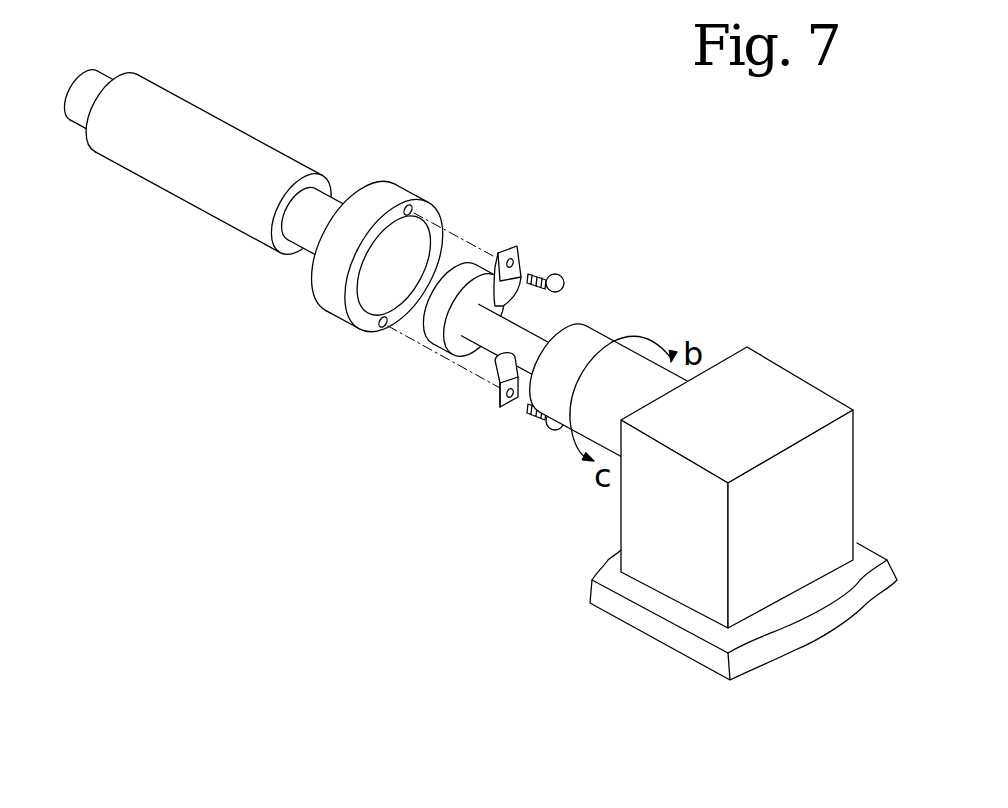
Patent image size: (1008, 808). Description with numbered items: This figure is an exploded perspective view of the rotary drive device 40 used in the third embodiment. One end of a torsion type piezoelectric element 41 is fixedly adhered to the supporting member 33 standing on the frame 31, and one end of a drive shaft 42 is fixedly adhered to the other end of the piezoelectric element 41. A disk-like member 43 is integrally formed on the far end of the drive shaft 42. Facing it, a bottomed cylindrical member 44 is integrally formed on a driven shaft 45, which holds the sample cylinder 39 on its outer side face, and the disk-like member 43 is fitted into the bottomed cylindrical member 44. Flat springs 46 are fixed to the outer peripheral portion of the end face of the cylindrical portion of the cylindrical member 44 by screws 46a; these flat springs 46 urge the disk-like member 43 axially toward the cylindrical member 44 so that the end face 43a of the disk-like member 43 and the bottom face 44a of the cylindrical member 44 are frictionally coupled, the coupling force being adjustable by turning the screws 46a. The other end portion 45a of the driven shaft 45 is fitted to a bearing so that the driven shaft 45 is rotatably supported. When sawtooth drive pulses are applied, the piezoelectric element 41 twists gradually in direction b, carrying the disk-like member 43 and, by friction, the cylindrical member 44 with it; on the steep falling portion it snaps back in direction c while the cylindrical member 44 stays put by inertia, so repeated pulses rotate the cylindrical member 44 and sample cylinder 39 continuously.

The frame 31 is at (863, 563).
The supporting member 33 is at (775, 380).
The sample cylinder 39 is at (240, 143).
The rotary drive device 40 is at (379, 281).
The torsion type piezoelectric element 41 is at (582, 340).
The drive shaft 42 is at (492, 340).
The disk-like member 43 is at (447, 294).
The end face 43a is at (455, 243).
The bottomed cylindrical member 44 is at (362, 284).
The bottom face 44a is at (372, 275).
The driven shaft 45 is at (293, 233).
The other end portion of the driven shaft 45a is at (103, 78).
The flat springs 46 is at (512, 283).
The screws 46a is at (555, 283).